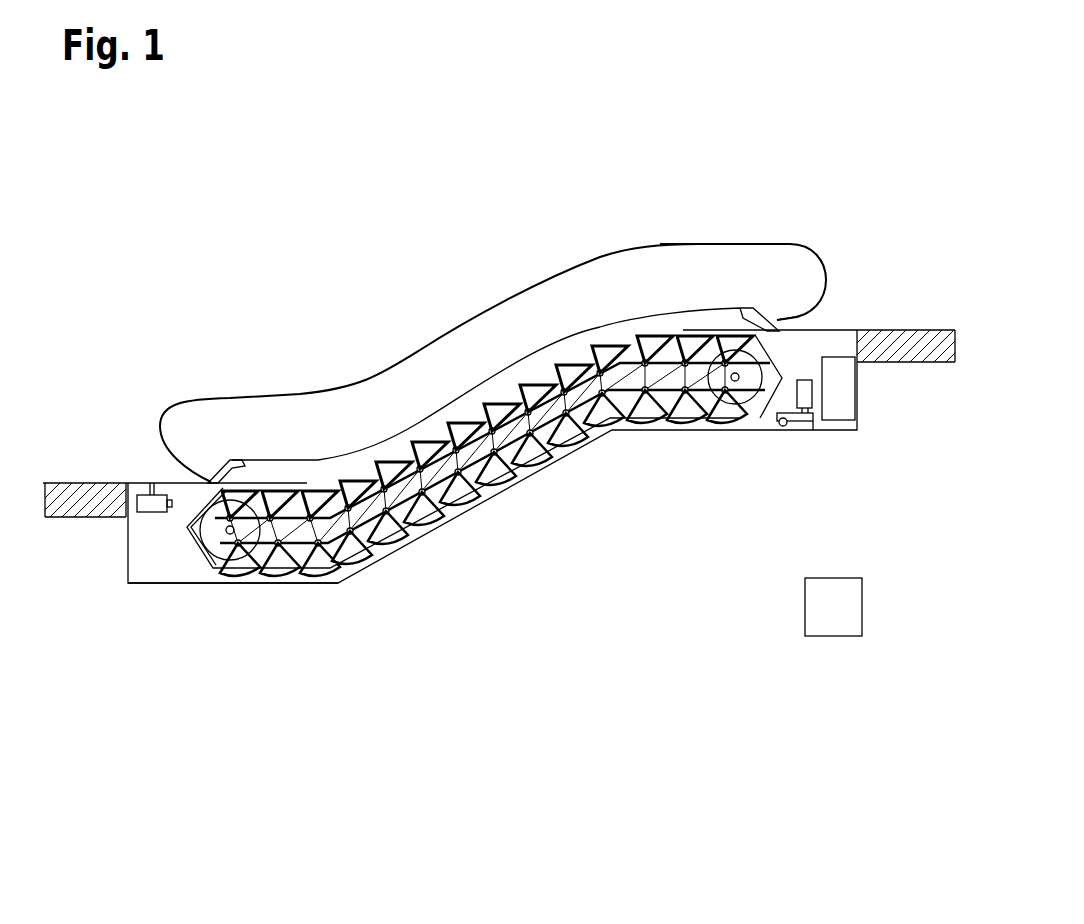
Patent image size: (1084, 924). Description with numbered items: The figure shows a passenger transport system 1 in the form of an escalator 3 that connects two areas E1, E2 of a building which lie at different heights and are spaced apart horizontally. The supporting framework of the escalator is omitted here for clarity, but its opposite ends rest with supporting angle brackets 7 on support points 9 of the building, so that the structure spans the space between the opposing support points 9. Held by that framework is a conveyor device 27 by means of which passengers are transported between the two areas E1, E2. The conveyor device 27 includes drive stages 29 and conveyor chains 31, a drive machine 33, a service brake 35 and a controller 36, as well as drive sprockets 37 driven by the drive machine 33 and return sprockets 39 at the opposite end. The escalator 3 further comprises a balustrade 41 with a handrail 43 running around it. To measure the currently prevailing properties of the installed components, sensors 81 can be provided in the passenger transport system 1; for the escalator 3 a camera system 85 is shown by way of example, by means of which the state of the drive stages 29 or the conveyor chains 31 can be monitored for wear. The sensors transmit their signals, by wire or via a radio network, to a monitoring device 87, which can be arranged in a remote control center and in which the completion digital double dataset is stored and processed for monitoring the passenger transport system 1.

The passenger transport system 1 is at (207, 220).
The escalator 3 is at (361, 288).
The supporting angle brackets 7 is at (118, 474).
The support points 9 is at (118, 503).
The conveyor device 27 is at (441, 310).
The drive stages 29 is at (478, 402).
The conveyor chains 31 is at (580, 355).
The drive machine 33 is at (802, 423).
The service brake 35 is at (817, 333).
The controller 36 is at (840, 402).
The drive sprockets 37 is at (724, 380).
The return sprockets 39 is at (222, 566).
The balustrade 41 is at (747, 263).
The handrail 43 is at (698, 245).
The sensors 81 is at (163, 552).
The camera system 85 is at (145, 527).
The monitoring device 87 is at (828, 662).
The area E1 is at (78, 463).
The area E2 is at (940, 307).